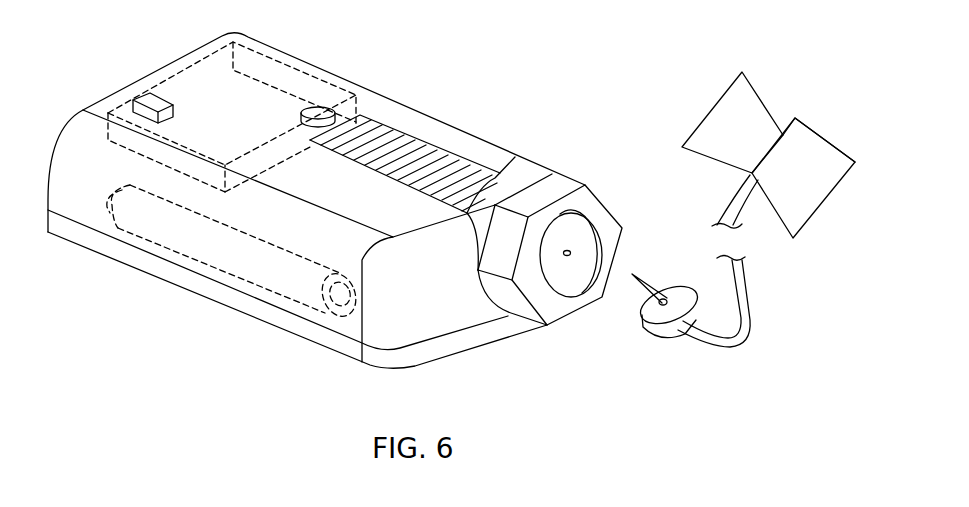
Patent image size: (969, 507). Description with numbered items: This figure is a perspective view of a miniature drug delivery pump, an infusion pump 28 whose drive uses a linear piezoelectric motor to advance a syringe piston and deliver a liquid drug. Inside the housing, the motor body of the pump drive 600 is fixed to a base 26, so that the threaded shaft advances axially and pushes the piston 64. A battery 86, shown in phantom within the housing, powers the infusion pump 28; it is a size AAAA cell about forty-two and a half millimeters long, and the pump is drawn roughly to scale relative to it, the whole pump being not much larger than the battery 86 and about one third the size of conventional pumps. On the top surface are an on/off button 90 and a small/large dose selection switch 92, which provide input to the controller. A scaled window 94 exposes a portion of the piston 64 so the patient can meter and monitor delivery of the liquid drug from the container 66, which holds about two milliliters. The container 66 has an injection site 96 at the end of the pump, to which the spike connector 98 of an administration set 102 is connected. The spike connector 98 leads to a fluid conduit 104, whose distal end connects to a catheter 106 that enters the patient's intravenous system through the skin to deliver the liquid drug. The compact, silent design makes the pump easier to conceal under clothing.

The infusion pump 28 is at (97, 79).
The base 26 is at (127, 255).
The pump drive 600 is at (275, 55).
The small/large dose selection switch 92 is at (157, 100).
The on/off button 90 is at (302, 115).
The piston 64 is at (372, 138).
The scaled window 94 is at (458, 160).
The battery 86 is at (247, 282).
The container 66 is at (562, 283).
The injection site 96 is at (571, 253).
The administration set 102 is at (795, 97).
The catheter 106 is at (813, 133).
The spike connector 98 is at (668, 333).
The fluid conduit 104 is at (747, 345).